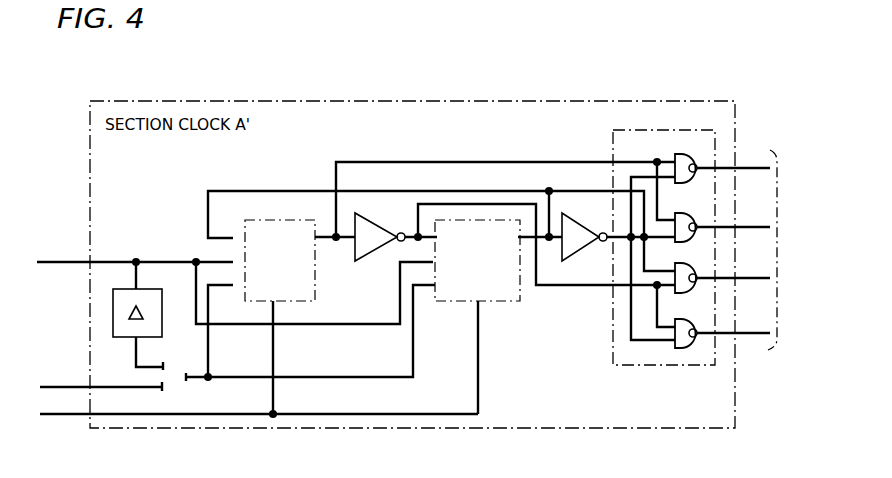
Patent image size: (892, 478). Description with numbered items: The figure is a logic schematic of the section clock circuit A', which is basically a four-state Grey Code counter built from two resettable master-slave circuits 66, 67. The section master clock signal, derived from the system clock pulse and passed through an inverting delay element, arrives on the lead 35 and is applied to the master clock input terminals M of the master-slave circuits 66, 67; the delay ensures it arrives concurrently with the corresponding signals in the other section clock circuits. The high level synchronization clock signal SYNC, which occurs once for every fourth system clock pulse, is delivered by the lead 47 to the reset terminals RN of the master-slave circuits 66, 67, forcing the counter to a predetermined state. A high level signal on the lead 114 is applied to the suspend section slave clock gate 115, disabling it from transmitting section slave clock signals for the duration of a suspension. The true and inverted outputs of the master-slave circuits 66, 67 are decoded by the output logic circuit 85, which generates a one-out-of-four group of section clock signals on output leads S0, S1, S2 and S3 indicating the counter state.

The lead 35 is at (70, 261).
The lead 114 is at (69, 386).
The suspend section slave clock gate 115 is at (175, 391).
The lead 47 is at (72, 413).
The resettable master-slave circuit 66 is at (317, 278).
The resettable master-slave circuit 67 is at (508, 302).
The output logic circuit 85 is at (686, 128).